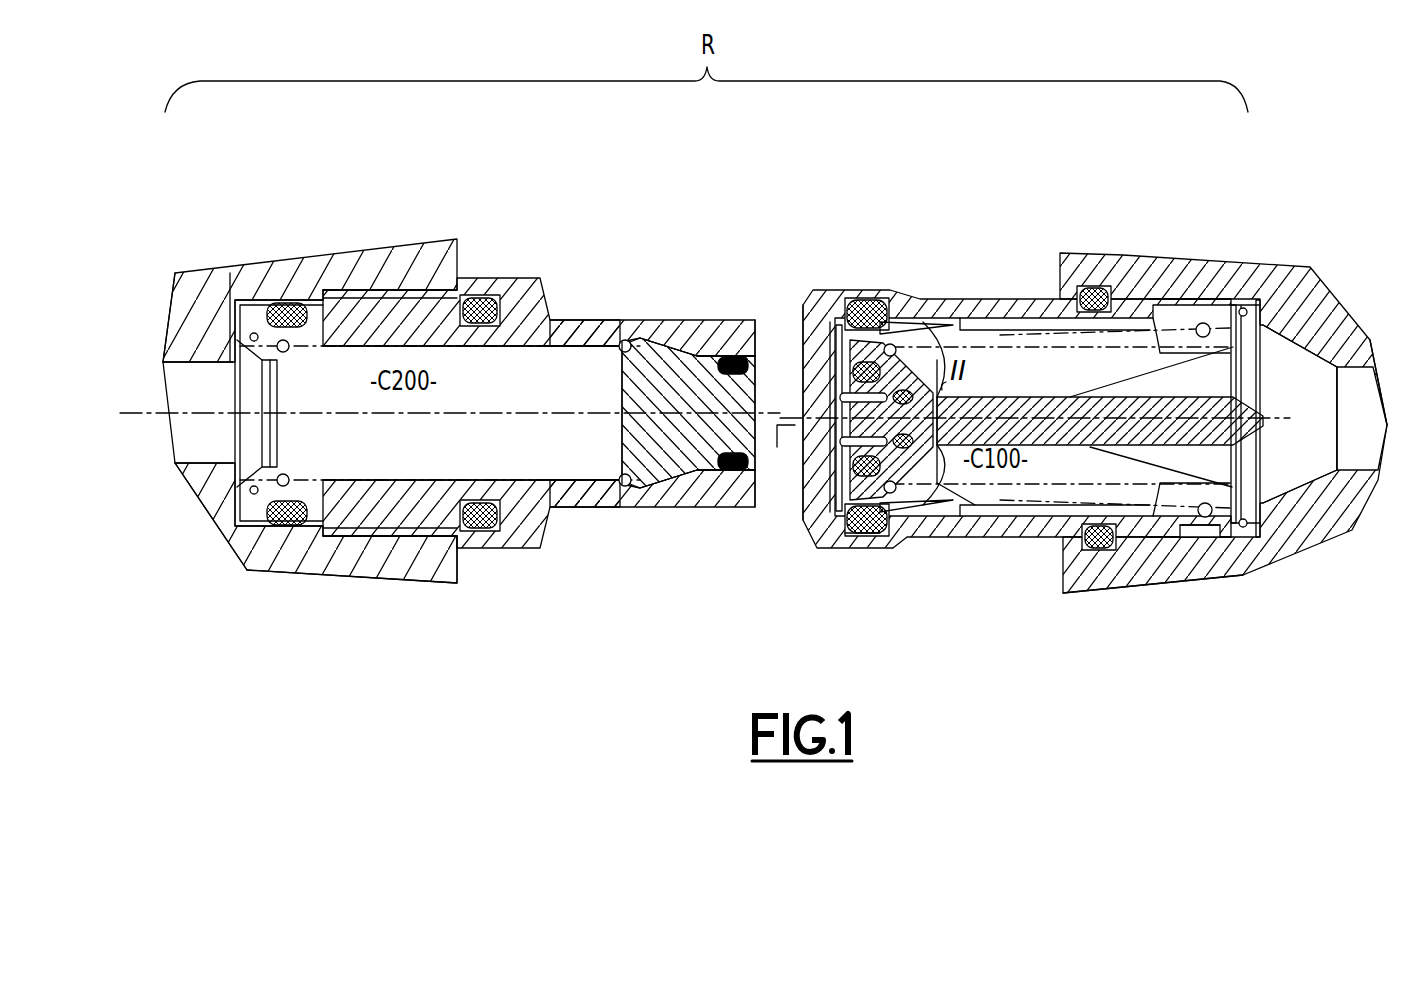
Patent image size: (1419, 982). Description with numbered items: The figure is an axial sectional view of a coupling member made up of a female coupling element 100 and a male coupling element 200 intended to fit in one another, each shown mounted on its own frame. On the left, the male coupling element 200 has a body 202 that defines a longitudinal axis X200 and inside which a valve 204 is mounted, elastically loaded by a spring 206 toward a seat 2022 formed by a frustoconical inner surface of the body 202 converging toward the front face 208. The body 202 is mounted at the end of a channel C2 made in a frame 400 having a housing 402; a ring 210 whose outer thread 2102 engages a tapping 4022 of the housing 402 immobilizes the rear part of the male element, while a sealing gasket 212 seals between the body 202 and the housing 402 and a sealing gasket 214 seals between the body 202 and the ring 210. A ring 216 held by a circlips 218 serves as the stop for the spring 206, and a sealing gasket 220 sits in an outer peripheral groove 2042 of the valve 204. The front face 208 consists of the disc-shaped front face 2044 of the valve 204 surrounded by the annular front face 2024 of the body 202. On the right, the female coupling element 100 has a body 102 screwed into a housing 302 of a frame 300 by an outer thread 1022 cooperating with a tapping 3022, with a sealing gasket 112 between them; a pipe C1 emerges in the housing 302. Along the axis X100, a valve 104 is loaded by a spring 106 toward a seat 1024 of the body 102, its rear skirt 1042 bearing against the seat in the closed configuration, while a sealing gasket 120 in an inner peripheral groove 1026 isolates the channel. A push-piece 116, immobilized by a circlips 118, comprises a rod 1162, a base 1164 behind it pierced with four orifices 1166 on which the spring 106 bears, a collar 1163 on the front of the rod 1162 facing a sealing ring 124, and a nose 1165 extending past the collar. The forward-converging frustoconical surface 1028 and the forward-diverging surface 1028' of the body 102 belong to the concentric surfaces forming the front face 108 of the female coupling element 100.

The female coupling element 100 is at (1012, 384).
The body 102 is at (1032, 537).
The valve 104 is at (866, 520).
The spring 106 is at (1027, 343).
The front face 108 is at (777, 449).
The sealing gasket 112 is at (1097, 548).
The push-piece 116 is at (1113, 372).
The circlips 118 is at (1273, 538).
The sealing gasket 120 is at (868, 528).
The sealing ring 124 is at (875, 296).
The outer thread 1022 is at (1178, 290).
The seat 1024 is at (950, 500).
The inner peripheral groove 1026 is at (828, 478).
The frustoconical surface 1028 is at (799, 497).
The forward frustoconical surface 1028' is at (766, 469).
The rear skirt 1042 is at (917, 318).
The rod 1162 is at (1050, 407).
The collar 1163 is at (965, 532).
The base 1164 is at (1242, 535).
The nose 1165 is at (940, 372).
The orifices 1166 is at (1183, 352).
The male coupling element 200 is at (455, 372).
The body 202 is at (558, 505).
The valve 204 is at (647, 463).
The spring 206 is at (365, 472).
The front face 208 is at (686, 204).
The ring 210 is at (390, 535).
The sealing gasket 212 is at (307, 535).
The sealing gasket 214 is at (483, 540).
The ring 216 is at (250, 470).
The circlips 218 is at (230, 280).
The sealing gasket 220 is at (697, 510).
The seat 2022 is at (670, 362).
The front face of the body 2024 is at (765, 368).
The outer peripheral groove 2042 is at (727, 352).
The front face of the valve 2044 is at (765, 320).
The outer thread 2102 is at (383, 258).
The frame 300 is at (1248, 287).
The housing 302 is at (1327, 320).
The tapping 3022 is at (1198, 530).
The frame 400 is at (270, 275).
The housing 402 is at (260, 570).
The tapping 4022 is at (427, 570).
The pipe C1 is at (1352, 435).
The channel C2 is at (187, 392).
The longitudinal axis X100 is at (1337, 470).
The longitudinal axis X200 is at (138, 420).